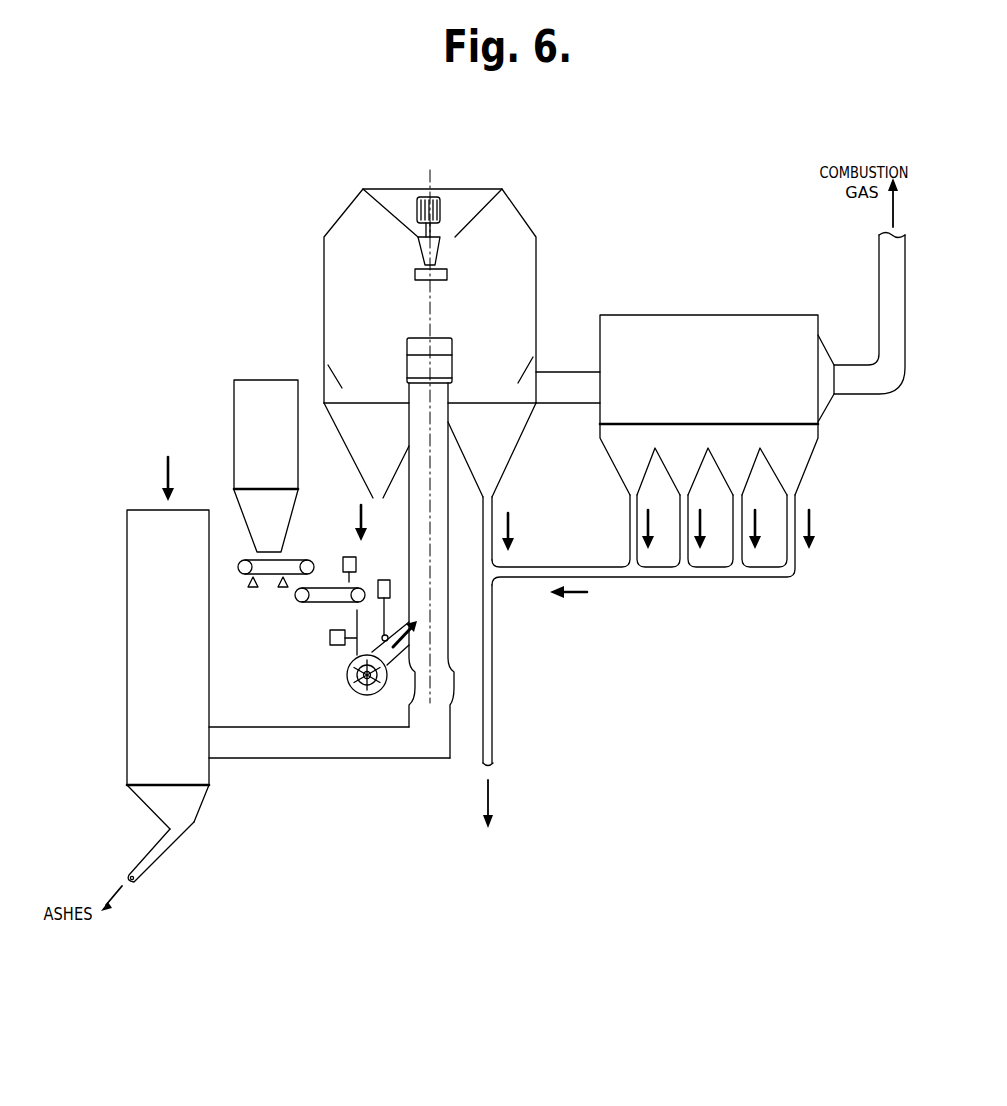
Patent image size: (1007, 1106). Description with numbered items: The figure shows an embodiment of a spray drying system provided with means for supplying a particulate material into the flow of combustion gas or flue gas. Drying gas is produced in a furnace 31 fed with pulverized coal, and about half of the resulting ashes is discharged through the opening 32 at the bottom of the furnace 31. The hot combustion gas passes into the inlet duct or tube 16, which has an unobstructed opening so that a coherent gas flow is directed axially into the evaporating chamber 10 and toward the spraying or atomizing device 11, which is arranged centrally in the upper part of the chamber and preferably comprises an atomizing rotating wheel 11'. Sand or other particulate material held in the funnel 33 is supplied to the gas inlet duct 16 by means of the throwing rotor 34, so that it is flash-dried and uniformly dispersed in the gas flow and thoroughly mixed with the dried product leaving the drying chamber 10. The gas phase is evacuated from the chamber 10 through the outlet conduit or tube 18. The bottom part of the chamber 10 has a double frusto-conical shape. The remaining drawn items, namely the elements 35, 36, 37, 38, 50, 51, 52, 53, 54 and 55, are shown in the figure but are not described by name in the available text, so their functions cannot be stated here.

The evaporating chamber 10 is at (523, 264).
The spraying or atomizing device 11 is at (462, 207).
The atomizing rotating wheel 11' is at (357, 274).
The inlet duct or tube for combustion gas 16 is at (446, 477).
The outlet conduit or tube 18 is at (553, 378).
The furnace 31 is at (201, 697).
The opening at the bottom of the furnace 32 is at (170, 829).
The funnel 33 is at (238, 415).
The throwing rotor 34 is at (361, 694).
The discharge pipe 35 is at (437, 675).
The dust collector 36 is at (709, 324).
The exhaust stack 37 is at (879, 285).
The chamber wall 38 is at (330, 366).
The feed conveyor 50 is at (258, 558).
The second conveyor 51 is at (325, 588).
The feed line 52 is at (355, 623).
The control valve 53 is at (347, 557).
The control unit 54 is at (333, 646).
The burner duct 55 is at (362, 648).